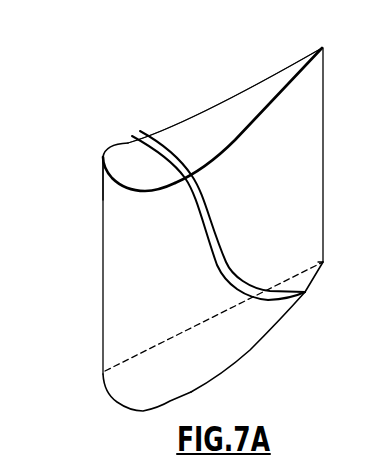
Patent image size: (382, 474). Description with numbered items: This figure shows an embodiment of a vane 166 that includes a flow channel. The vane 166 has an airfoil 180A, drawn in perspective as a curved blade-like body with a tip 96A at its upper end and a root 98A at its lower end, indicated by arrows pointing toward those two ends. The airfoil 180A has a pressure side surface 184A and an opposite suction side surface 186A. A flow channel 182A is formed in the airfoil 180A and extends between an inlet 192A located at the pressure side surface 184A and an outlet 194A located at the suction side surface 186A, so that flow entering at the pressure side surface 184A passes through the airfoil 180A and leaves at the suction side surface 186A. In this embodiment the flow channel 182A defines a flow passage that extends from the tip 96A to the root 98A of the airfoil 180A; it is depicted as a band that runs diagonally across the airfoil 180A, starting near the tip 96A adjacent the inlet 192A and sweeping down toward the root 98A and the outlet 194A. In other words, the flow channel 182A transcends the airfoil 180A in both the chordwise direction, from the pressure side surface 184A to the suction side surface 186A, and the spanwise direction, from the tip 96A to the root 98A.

The vane 166 is at (188, 224).
The airfoil 180A is at (245, 93).
The flow channel 182A is at (207, 213).
The pressure side surface 184A is at (187, 118).
The suction side surface 186A is at (259, 117).
The inlet 192A is at (134, 134).
The outlet 194A is at (338, 285).
The tip 96A is at (80, 188).
The root 98A is at (88, 398).